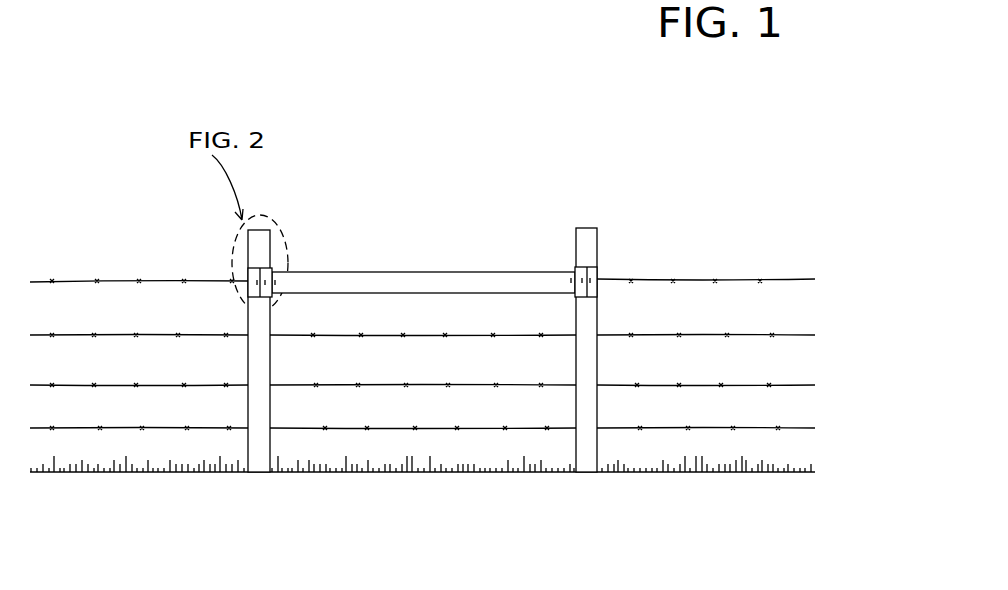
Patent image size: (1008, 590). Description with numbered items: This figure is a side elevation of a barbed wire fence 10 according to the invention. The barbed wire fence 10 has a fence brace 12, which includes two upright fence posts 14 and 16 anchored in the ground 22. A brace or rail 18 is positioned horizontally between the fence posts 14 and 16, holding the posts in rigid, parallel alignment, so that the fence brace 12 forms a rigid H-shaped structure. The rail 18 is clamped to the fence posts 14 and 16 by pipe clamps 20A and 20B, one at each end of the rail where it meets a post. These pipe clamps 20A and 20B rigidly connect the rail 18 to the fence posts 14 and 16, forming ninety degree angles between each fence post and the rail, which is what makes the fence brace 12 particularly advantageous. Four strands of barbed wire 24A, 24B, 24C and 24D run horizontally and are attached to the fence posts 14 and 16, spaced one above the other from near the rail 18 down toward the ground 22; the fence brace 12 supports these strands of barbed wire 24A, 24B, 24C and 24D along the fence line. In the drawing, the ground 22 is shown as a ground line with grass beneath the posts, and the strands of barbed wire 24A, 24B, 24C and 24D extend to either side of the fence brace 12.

The barbed wire fence 10 is at (716, 159).
The fence brace 12 is at (381, 242).
The fence post 14 is at (270, 237).
The fence post 16 is at (575, 235).
The rail 18 is at (422, 272).
The pipe clamp 20A is at (248, 278).
The pipe clamp 20B is at (598, 275).
The ground 22 is at (813, 468).
The strand of barbed wire 24A is at (792, 280).
The strand of barbed wire 24B is at (782, 333).
The strand of barbed wire 24C is at (793, 383).
The strand of barbed wire 24D is at (798, 427).